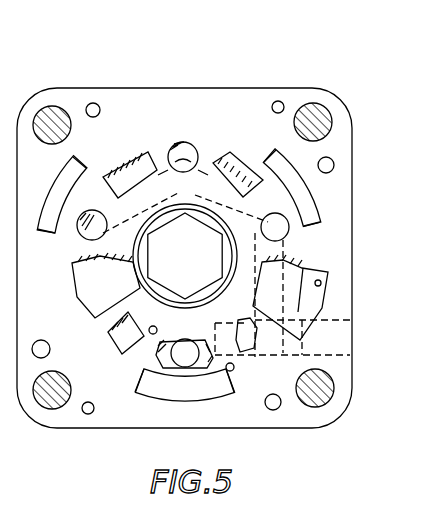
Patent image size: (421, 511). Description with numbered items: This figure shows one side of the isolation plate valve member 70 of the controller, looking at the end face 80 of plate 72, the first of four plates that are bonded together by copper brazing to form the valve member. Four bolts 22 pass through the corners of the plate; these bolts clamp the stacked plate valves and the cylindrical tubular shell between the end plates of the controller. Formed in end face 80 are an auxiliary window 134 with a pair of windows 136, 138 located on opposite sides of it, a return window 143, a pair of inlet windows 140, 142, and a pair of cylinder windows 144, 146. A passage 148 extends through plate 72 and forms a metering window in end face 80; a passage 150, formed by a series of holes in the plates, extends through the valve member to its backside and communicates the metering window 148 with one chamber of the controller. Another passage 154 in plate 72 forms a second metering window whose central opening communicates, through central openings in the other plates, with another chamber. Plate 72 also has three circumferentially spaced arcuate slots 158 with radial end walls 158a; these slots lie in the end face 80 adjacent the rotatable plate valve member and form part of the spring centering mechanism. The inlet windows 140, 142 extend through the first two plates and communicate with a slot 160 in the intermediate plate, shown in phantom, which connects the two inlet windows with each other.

The bolts 22 is at (48, 113).
The isolation plate valve member 70 is at (234, 80).
The plate 72 is at (190, 143).
The end face 80 is at (205, 60).
The auxiliary window 134 is at (188, 150).
The window 136 is at (118, 170).
The window 138 is at (228, 160).
The inlet window 140 is at (80, 250).
The inlet window 142 is at (286, 233).
The return window 143 is at (173, 340).
The cylinder window 144 is at (117, 345).
The cylinder window 146 is at (236, 354).
The passage (metering window) 148 is at (312, 328).
The passage 150 is at (330, 272).
The passage (metering window) 154 is at (84, 296).
The arcuate slots 158 is at (71, 184).
The radial end walls 158a is at (79, 165).
The slot 160 is at (181, 236).